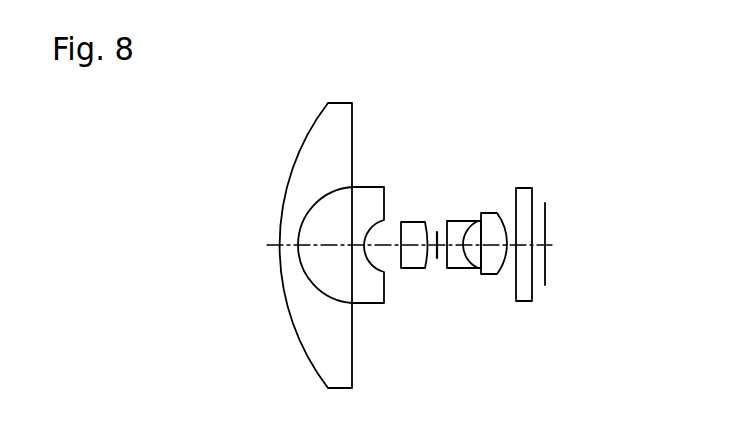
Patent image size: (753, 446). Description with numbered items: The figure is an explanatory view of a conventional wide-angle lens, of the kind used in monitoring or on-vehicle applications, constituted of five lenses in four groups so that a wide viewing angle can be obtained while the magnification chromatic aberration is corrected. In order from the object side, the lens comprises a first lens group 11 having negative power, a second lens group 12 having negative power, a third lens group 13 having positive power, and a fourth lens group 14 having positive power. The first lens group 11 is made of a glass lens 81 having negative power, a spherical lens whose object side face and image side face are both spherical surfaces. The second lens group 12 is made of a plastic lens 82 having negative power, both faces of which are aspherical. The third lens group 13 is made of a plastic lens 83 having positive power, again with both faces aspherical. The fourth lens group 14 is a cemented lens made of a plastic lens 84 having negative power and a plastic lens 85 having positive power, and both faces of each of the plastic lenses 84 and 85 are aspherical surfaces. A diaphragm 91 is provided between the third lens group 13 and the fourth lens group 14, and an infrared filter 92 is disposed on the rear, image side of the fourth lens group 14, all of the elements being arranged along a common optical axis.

The first lens group 11 is at (284, 245).
The glass lens 81 is at (326, 129).
The second lens group 12 is at (380, 189).
The plastic lens 82 is at (375, 186).
The third lens group 13 is at (414, 195).
The plastic lens 83 is at (414, 227).
The fourth lens group 14 is at (492, 180).
The plastic lens 84 is at (458, 226).
The plastic lens 85 is at (490, 222).
The diaphragm 91 is at (438, 252).
The infrared filter 92 is at (523, 292).